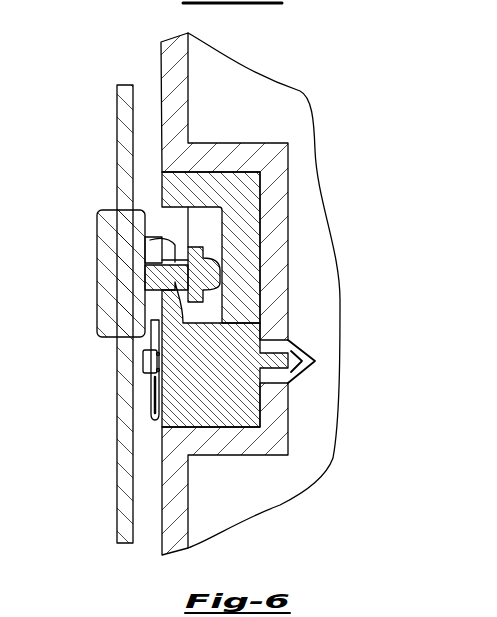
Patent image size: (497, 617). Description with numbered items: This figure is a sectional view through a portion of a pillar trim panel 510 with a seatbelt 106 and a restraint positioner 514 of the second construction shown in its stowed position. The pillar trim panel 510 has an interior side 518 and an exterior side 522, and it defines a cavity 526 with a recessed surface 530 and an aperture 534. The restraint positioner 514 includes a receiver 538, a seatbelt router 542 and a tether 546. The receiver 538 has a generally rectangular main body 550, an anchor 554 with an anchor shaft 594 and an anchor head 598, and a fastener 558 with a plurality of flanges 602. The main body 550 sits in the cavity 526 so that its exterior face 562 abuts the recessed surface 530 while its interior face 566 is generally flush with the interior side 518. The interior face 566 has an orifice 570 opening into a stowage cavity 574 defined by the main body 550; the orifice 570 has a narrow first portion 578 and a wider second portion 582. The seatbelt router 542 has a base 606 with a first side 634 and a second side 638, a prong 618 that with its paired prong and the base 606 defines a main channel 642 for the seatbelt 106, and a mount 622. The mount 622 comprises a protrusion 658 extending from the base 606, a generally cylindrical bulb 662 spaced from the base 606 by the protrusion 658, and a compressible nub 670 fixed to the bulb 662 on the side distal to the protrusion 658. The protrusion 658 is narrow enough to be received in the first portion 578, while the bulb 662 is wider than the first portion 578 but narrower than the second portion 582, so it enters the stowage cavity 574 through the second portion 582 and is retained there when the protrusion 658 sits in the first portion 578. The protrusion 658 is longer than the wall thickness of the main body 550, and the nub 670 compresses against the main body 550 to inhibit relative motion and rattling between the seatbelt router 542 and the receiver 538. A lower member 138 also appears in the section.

The seatbelt 106 is at (117, 107).
The lower member 138 is at (117, 492).
The pillar trim panel 510 is at (167, 47).
The restraint positioner 514 is at (89, 136).
The interior side 518 is at (125, 528).
The exterior side 522 is at (290, 447).
The cavity 526 is at (243, 170).
The recessed surface 530 is at (265, 183).
The aperture 534 is at (273, 378).
The receiver 538 is at (200, 428).
The seatbelt router 542 is at (97, 213).
The tether 546 is at (152, 419).
The main body 550 is at (240, 428).
The anchor 554 is at (145, 372).
The fastener 558 is at (317, 362).
The exterior face 562 is at (262, 413).
The interior face 566 is at (160, 508).
The orifice 570 is at (162, 153).
The stowage cavity 574 is at (218, 172).
The first portion 578 is at (225, 354).
The second portion 582 is at (188, 172).
The anchor shaft 594 is at (160, 360).
The anchor head 598 is at (143, 357).
The flanges 602 is at (312, 358).
The base 606 is at (143, 232).
The prong 618 is at (98, 227).
The mount 622 is at (197, 233).
The first side 634 is at (140, 292).
The second side 638 is at (150, 221).
The main channel 642 is at (113, 295).
The protrusion 658 is at (150, 240).
The bulb 662 is at (226, 310).
The nub 670 is at (222, 275).